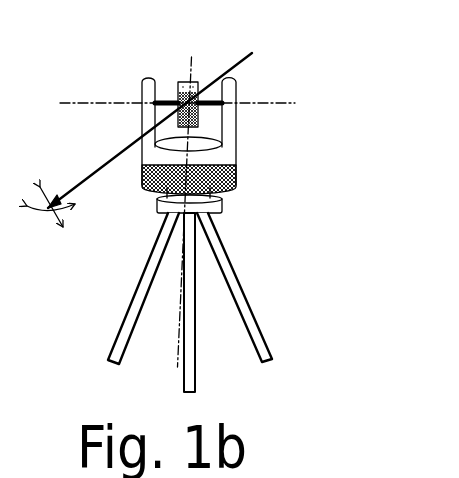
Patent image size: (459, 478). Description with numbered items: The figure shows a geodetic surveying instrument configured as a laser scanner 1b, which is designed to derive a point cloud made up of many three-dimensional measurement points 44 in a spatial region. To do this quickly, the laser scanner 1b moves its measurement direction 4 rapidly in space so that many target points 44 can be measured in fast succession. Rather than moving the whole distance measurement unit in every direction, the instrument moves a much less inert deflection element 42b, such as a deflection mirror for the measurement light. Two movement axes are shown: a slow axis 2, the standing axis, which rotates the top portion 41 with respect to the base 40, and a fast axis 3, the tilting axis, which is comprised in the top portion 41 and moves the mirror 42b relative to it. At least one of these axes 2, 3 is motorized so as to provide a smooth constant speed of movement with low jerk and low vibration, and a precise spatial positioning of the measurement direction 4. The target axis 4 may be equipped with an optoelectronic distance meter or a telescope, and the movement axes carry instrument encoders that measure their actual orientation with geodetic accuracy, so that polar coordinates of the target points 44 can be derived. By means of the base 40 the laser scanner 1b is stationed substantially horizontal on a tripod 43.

The laser scanner 1b is at (209, 52).
The slow axis 2 is at (190, 75).
The fast axis 3 is at (110, 103).
The measurement direction 4 is at (100, 170).
The base 40 is at (228, 182).
The top portion 41 is at (227, 130).
The deflection element 42b is at (252, 53).
The tripod 43 is at (245, 293).
The measurement points 44 is at (48, 210).